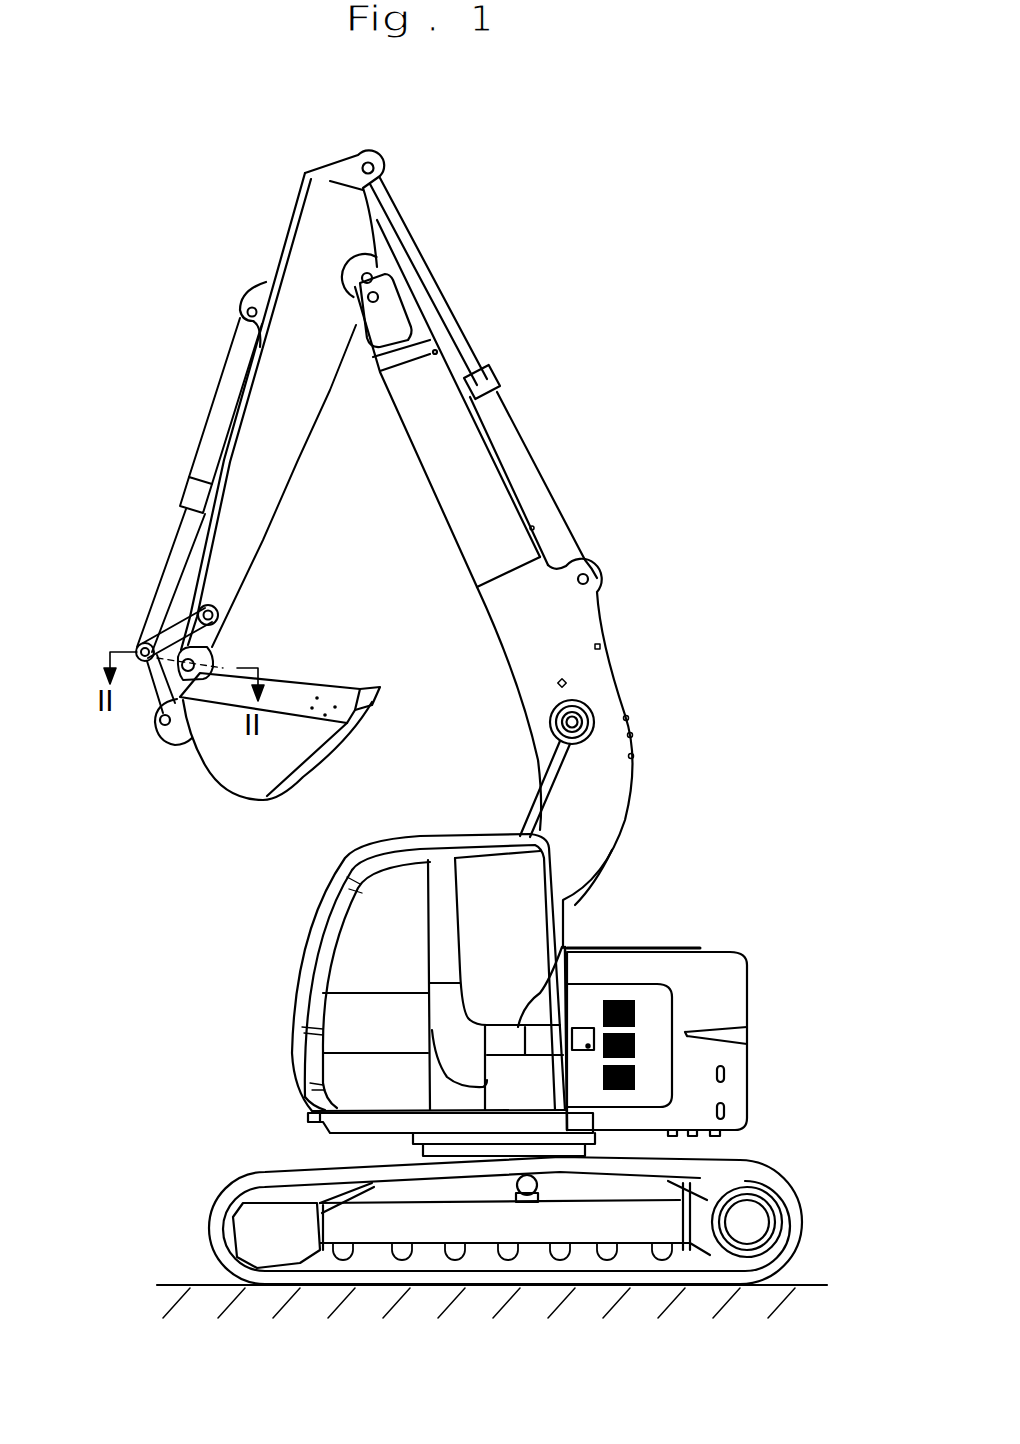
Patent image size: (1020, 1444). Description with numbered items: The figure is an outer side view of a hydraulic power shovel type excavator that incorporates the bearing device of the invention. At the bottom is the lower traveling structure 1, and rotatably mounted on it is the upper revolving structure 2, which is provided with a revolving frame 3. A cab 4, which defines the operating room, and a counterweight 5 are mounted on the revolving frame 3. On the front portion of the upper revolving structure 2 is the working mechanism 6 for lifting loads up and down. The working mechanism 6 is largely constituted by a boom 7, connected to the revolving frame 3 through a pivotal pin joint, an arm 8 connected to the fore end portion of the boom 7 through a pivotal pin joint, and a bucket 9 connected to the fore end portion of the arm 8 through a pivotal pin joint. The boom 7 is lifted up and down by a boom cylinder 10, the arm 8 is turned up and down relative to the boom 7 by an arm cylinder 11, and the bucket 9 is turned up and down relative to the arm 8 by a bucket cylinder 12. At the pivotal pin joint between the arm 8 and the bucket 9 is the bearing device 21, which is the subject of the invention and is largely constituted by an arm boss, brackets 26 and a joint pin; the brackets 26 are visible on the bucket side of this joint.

The lower traveling structure 1 is at (235, 1172).
The upper revolving structure 2 is at (677, 948).
The revolving frame 3 is at (335, 1122).
The cab 4 is at (322, 918).
The counterweight 5 is at (722, 1003).
The working mechanism 6 is at (297, 208).
The boom 7 is at (470, 540).
The arm 8 is at (287, 459).
The bucket 9 is at (217, 763).
The boom cylinder 10 is at (538, 787).
The arm cylinder 11 is at (525, 460).
The bucket cylinder 12 is at (180, 525).
The bearing device 21 is at (200, 652).
The brackets 26 is at (160, 703).